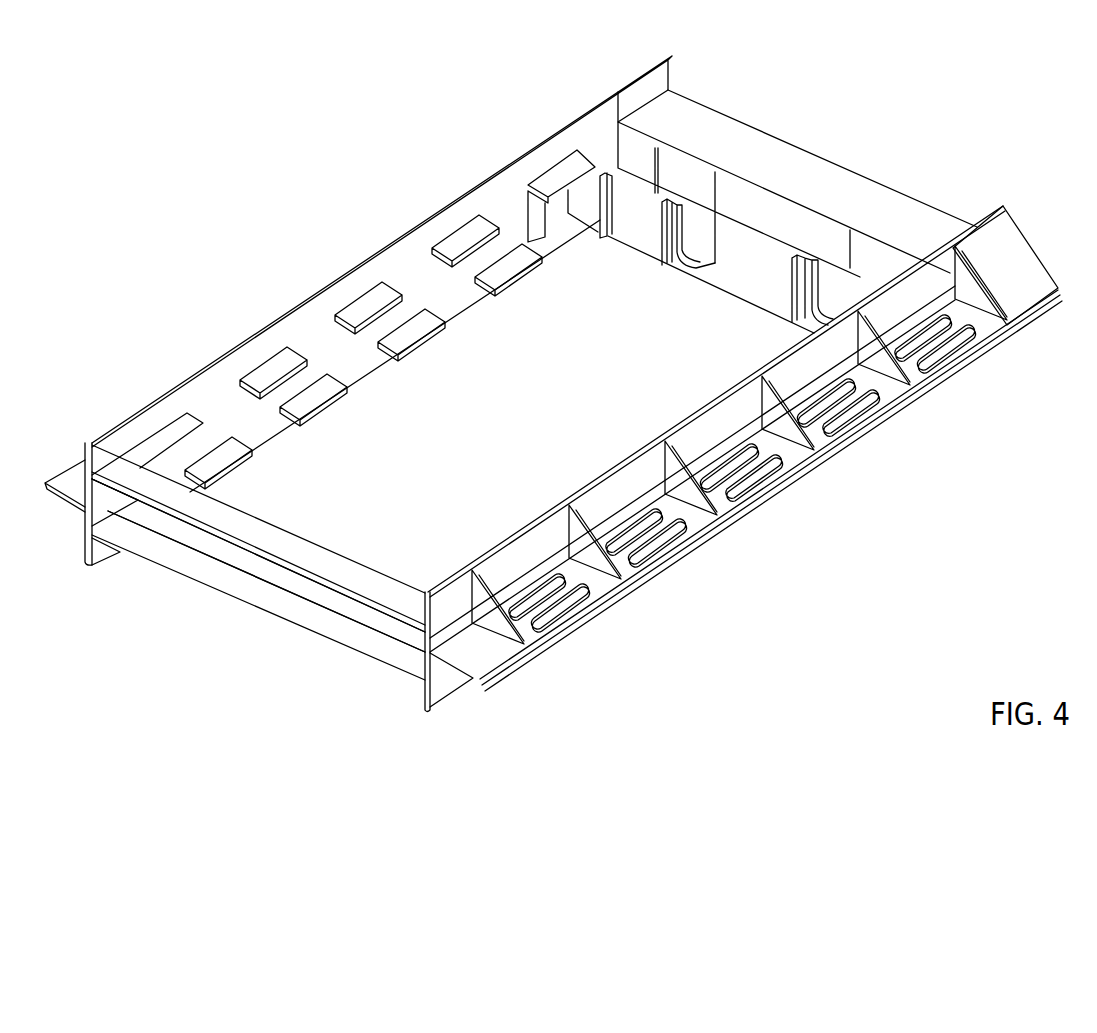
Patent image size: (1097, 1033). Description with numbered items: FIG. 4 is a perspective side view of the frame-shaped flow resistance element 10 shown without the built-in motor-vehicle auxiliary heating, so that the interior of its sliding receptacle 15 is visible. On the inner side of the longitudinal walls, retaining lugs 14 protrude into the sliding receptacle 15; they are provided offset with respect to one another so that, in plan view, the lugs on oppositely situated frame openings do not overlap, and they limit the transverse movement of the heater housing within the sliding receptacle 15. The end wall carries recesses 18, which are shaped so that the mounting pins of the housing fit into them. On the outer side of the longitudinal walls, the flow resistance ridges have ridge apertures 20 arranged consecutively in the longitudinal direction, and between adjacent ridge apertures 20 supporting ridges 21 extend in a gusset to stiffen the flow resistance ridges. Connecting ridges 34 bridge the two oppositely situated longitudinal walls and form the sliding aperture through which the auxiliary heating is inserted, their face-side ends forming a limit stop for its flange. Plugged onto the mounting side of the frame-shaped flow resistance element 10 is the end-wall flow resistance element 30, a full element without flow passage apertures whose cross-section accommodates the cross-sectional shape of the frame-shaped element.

The frame-shaped flow resistance element 10 is at (508, 127).
The retaining lugs 14 is at (327, 385).
The sliding receptacle 15 is at (243, 556).
The recesses 18 is at (822, 313).
The ridge apertures 20 is at (682, 517).
The supporting ridges 21 is at (608, 560).
The end-wall flow resistance element 30 is at (808, 128).
The connecting ridges 34 is at (150, 543).